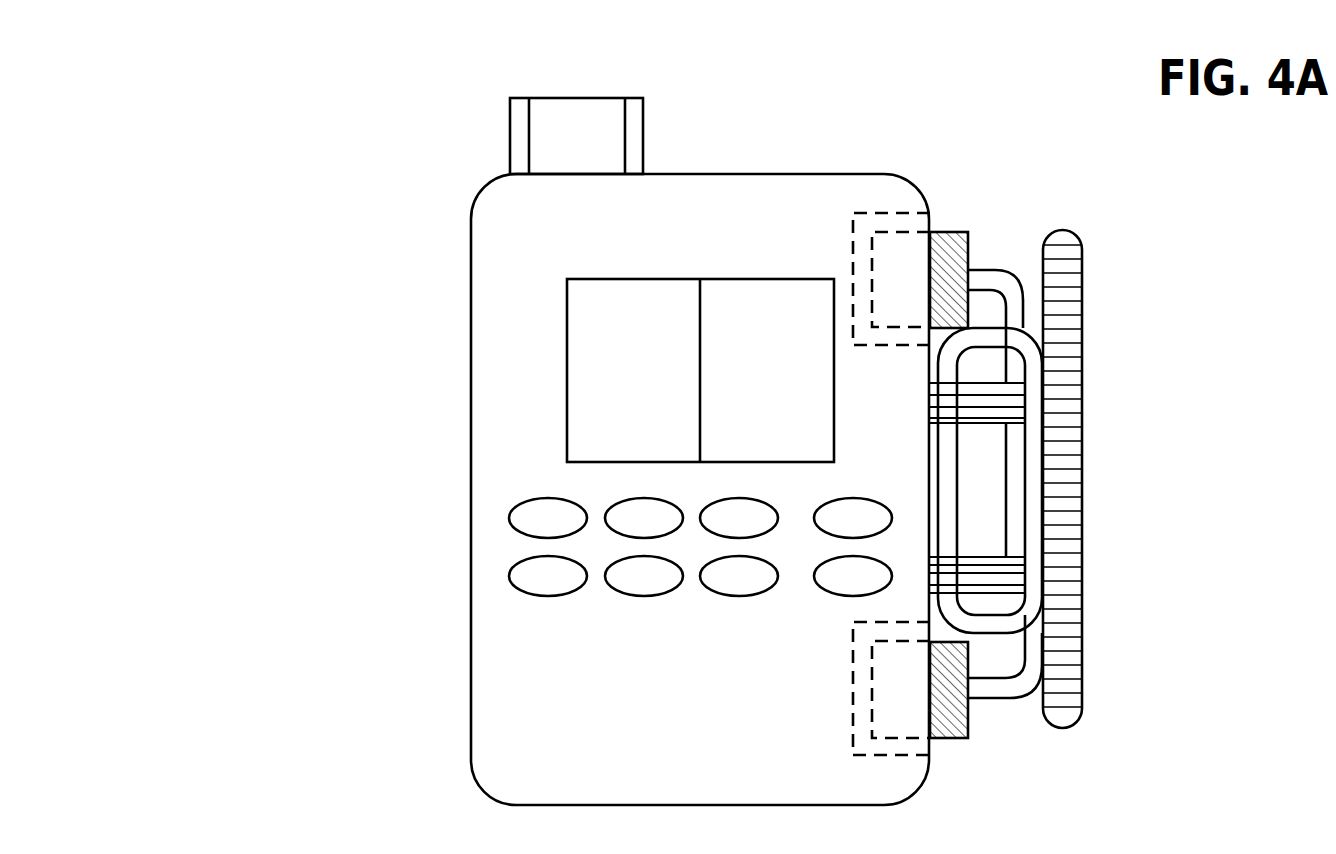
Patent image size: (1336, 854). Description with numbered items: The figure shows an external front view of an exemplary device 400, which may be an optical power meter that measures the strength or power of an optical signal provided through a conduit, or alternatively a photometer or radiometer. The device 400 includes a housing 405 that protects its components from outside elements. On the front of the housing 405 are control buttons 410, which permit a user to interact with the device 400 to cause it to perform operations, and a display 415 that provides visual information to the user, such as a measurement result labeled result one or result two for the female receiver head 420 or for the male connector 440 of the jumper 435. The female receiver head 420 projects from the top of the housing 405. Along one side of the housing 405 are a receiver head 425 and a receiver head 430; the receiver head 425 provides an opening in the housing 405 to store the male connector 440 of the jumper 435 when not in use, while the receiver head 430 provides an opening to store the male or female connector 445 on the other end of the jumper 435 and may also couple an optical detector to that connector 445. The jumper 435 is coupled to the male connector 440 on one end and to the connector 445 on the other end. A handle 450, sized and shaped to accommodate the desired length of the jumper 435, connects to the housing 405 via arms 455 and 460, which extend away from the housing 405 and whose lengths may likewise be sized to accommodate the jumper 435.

The device 400 is at (208, 90).
The housing 405 is at (471, 442).
The control buttons 410 is at (471, 500).
The display 415 is at (567, 348).
The female receiver head 420 is at (500, 134).
The receiver head 425 is at (892, 205).
The receiver head 430 is at (900, 762).
The jumper 435 is at (1005, 290).
The male connector 440 is at (951, 225).
The male or female connector 445 is at (948, 718).
The handle 450 is at (1070, 433).
The arm 455 is at (1005, 393).
The arm 460 is at (1005, 575).